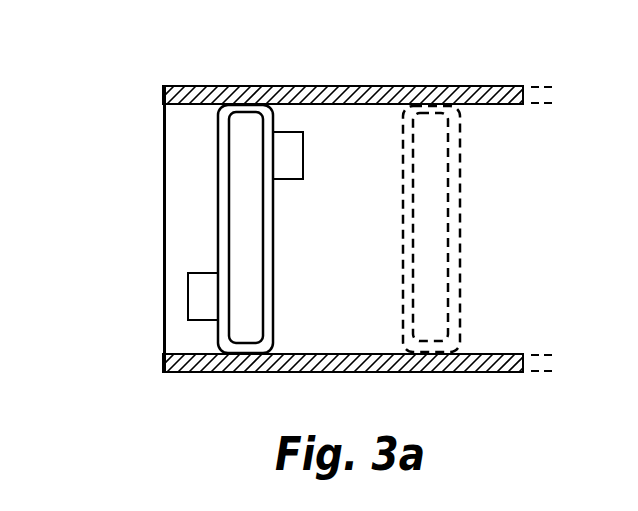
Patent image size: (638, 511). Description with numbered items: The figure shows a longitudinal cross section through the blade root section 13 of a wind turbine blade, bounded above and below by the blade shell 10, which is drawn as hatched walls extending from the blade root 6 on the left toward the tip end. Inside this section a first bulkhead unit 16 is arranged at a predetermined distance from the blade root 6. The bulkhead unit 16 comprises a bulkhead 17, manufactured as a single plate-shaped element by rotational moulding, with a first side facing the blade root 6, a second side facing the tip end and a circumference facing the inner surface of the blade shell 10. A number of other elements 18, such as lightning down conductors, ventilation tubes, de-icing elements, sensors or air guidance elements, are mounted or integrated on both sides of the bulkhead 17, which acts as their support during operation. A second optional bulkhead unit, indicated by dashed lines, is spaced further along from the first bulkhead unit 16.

The blade root section 13 is at (318, 192).
The blade shell 10 is at (430, 87).
The blade root 6 is at (141, 232).
The first bulkhead unit 16 is at (185, 229).
The bulkhead 17 is at (218, 247).
The other elements 18 is at (287, 132).